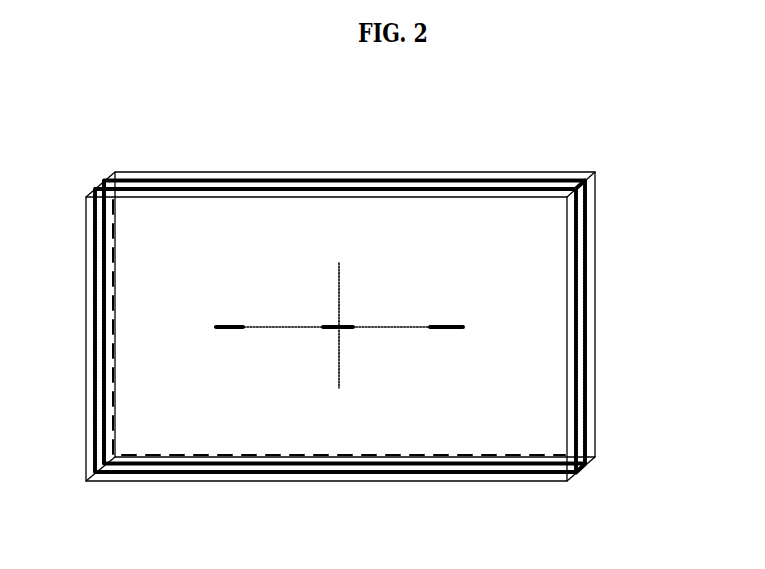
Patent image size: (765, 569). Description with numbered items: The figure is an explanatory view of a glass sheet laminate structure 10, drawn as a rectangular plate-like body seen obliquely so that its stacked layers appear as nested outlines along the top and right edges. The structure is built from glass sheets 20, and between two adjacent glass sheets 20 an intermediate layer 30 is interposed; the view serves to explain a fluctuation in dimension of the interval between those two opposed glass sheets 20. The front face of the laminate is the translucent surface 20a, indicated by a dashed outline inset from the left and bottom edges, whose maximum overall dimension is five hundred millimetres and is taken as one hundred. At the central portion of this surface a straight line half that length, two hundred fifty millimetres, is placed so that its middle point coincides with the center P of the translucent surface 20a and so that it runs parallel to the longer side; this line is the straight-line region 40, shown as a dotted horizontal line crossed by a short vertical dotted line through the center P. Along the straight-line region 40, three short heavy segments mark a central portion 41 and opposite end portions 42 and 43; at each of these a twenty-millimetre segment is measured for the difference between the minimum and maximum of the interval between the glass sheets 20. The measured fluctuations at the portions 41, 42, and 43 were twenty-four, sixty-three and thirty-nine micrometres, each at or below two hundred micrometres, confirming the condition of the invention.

The glass sheet laminate structure 10 is at (77, 252).
The glass sheet 20 is at (570, 310).
The translucent surface 20a is at (175, 400).
The intermediate layer 30 is at (573, 380).
The straight-line region 40 is at (403, 328).
The central portion 41 is at (340, 326).
The opposite end portion 42 is at (232, 326).
The opposite end portion 43 is at (442, 326).
The center of a surface P is at (339, 327).